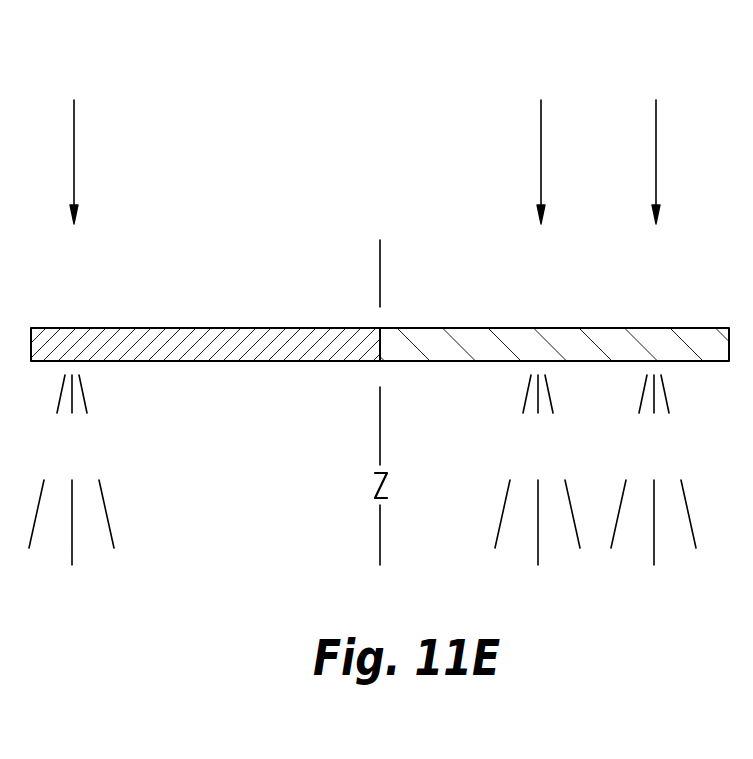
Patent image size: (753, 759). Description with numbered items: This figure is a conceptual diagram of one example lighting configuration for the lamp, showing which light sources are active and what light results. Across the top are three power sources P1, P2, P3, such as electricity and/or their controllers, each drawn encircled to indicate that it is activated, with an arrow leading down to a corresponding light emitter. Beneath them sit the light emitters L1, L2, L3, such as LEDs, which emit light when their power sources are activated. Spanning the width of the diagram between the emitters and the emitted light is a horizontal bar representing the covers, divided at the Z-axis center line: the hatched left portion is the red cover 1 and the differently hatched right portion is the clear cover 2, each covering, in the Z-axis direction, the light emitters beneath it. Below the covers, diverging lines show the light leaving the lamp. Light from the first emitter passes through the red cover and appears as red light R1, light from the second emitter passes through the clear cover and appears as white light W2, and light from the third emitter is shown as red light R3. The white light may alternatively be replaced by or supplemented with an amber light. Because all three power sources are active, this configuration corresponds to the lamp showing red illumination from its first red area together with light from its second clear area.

The cover 1 is at (215, 328).
The cover 2 is at (505, 328).
The power source P1 is at (63, 52).
The power source P2 is at (530, 52).
The power source P3 is at (645, 52).
The light emitter L1 is at (66, 240).
The light emitter L2 is at (532, 240).
The light emitter L3 is at (648, 240).
The red light R1 is at (57, 467).
The white light W2 is at (524, 422).
The red light R3 is at (640, 467).